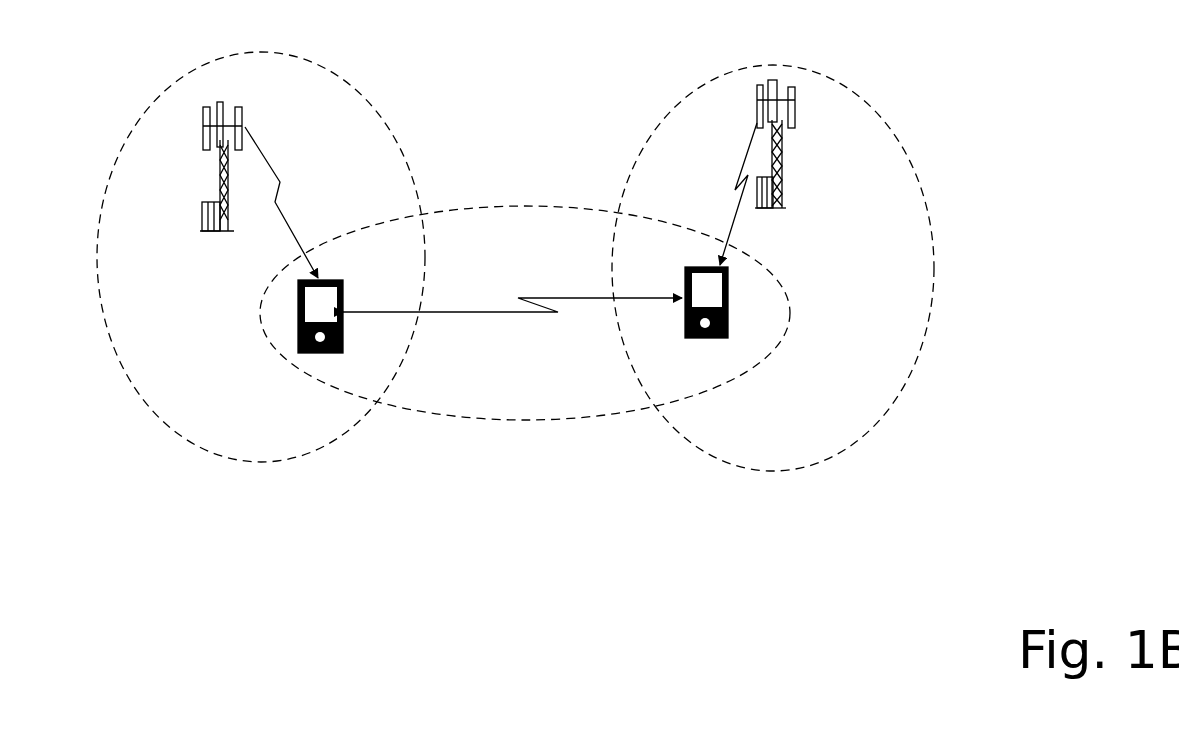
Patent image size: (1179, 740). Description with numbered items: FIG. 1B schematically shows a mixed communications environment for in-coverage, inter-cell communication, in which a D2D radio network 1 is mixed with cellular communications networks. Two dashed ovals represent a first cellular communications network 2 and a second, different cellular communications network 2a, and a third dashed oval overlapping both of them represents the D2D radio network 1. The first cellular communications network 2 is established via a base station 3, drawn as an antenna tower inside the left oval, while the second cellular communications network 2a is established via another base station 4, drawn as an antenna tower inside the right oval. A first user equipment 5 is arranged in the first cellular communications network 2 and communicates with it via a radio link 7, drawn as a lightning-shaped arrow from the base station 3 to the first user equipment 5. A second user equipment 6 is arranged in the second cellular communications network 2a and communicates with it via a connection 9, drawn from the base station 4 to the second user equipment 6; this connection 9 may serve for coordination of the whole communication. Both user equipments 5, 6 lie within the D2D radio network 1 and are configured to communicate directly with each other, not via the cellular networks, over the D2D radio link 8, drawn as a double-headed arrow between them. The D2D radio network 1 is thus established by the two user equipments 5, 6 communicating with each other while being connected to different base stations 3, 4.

The D2D radio network 1 is at (543, 425).
The cellular communications network 2 is at (178, 430).
The second cellular communications network 2a is at (892, 408).
The base station 3 is at (202, 138).
The base station 4 is at (757, 105).
The first user equipment 5 is at (298, 318).
The second user equipment 6 is at (732, 298).
The radio link 7 is at (262, 145).
The D2D radio link 8 is at (488, 310).
The connection 9 is at (728, 237).